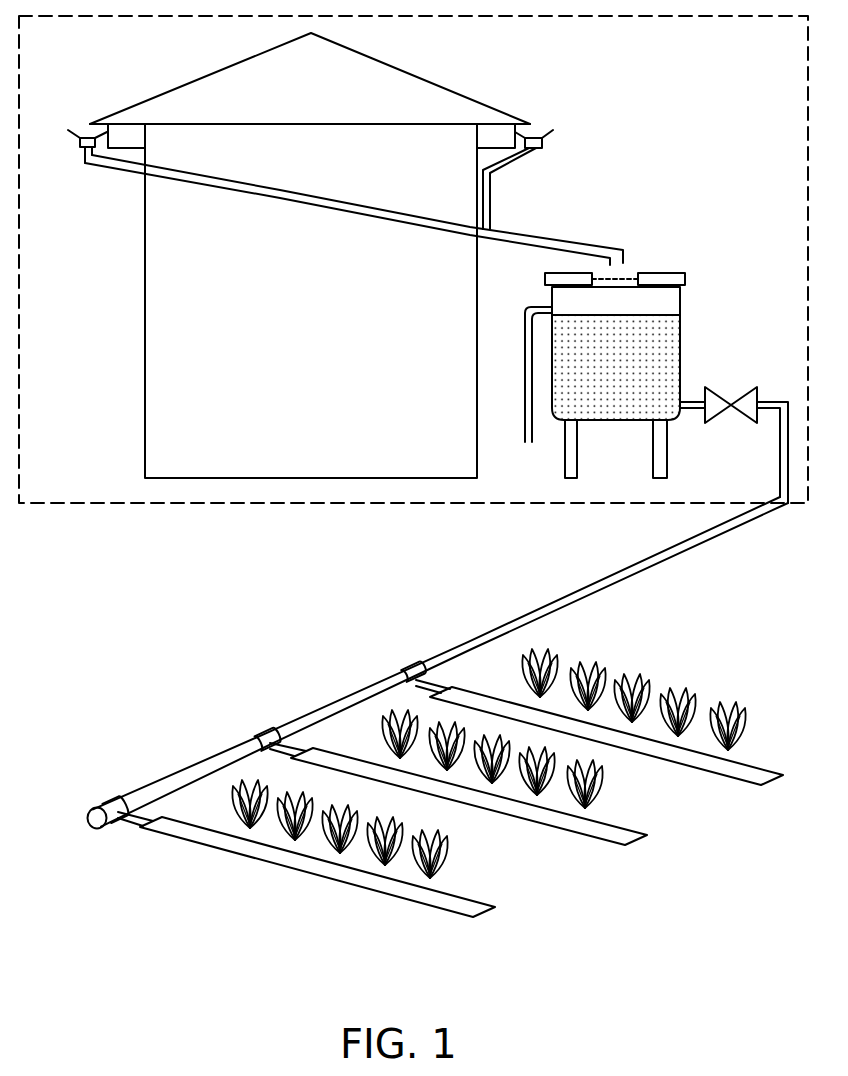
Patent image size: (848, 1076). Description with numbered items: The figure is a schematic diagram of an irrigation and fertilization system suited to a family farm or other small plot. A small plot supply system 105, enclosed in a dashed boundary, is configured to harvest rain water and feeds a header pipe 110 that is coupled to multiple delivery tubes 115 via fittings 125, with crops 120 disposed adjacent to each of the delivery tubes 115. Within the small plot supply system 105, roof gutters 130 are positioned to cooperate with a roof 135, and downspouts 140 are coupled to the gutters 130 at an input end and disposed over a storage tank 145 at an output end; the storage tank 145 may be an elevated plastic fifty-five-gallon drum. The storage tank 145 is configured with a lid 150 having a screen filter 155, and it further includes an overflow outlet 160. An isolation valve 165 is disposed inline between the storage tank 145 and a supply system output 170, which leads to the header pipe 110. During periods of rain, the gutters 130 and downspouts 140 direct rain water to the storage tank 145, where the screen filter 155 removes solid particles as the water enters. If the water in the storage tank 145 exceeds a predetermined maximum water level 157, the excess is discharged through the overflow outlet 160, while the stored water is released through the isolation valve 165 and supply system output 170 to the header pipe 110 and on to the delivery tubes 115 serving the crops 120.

The small plot supply system 105 is at (104, 513).
The header pipe 110 is at (468, 643).
The delivery tubes 115 is at (624, 842).
The crops 120 is at (662, 824).
The fittings 125 is at (117, 776).
The roof gutters 130 is at (64, 112).
The roof 135 is at (442, 84).
The downspouts 140 is at (542, 237).
The storage tank 145 is at (682, 380).
The lid 150 is at (662, 272).
The screen filter 155 is at (627, 272).
The predetermined maximum water level 157 is at (641, 313).
The overflow outlet 160 is at (548, 308).
The isolation valve 165 is at (733, 383).
The supply system output 170 is at (780, 440).